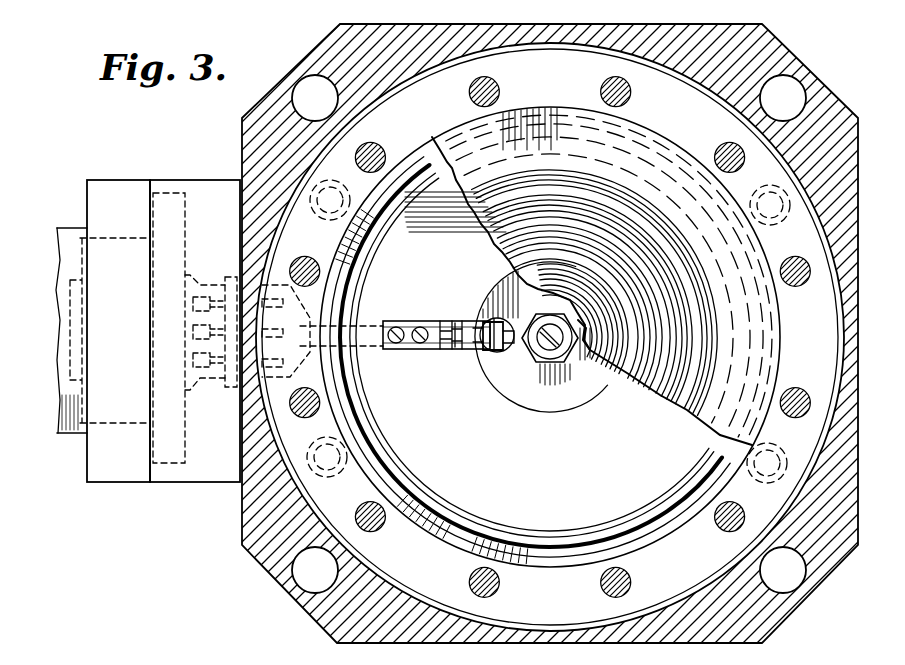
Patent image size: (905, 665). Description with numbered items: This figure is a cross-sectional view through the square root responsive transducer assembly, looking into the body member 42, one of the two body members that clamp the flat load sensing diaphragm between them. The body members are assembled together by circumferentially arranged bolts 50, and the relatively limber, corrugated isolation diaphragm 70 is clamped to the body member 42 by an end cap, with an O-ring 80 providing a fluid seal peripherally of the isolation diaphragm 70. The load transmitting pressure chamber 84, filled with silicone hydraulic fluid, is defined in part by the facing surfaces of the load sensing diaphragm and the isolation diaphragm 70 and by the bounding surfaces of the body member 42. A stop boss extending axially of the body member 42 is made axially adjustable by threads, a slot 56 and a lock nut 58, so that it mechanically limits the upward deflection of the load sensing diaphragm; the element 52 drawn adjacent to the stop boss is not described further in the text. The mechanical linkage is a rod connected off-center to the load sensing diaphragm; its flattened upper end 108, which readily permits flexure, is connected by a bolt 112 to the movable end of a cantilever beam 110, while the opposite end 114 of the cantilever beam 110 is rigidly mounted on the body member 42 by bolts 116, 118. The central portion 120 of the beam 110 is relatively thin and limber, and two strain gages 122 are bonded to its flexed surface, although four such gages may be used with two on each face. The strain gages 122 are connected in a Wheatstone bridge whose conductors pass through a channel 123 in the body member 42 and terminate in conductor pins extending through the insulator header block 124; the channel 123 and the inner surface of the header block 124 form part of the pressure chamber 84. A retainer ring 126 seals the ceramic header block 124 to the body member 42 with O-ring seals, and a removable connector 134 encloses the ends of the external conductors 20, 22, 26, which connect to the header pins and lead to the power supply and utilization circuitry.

The body member 42 is at (338, 38).
The bolts 50 is at (330, 180).
The isolation diaphragm 70 is at (674, 245).
The O-ring 80 is at (454, 501).
The load transmitting pressure chamber 84 is at (592, 392).
The slot 56 is at (536, 341).
The lock nut 58 is at (571, 318).
The shaft step 52 is at (588, 352).
The bolt 118 is at (399, 321).
The opposite end of cantilever beam 114 is at (398, 346).
The bolt 116 is at (418, 343).
The strain gages 122 is at (444, 320).
The thin central portion of beam 120 is at (452, 350).
The cantilever beam 110 is at (482, 318).
The bolt 112 is at (507, 325).
The upper end of linkage rod 108 is at (504, 349).
The channel 123 is at (300, 330).
The removable connector 134 is at (118, 182).
The retainer ring 126 is at (198, 182).
The insulator header block 124 is at (228, 273).
The external conductor 26 is at (186, 303).
The external conductor 20 is at (186, 335).
The external conductor 22 is at (186, 363).